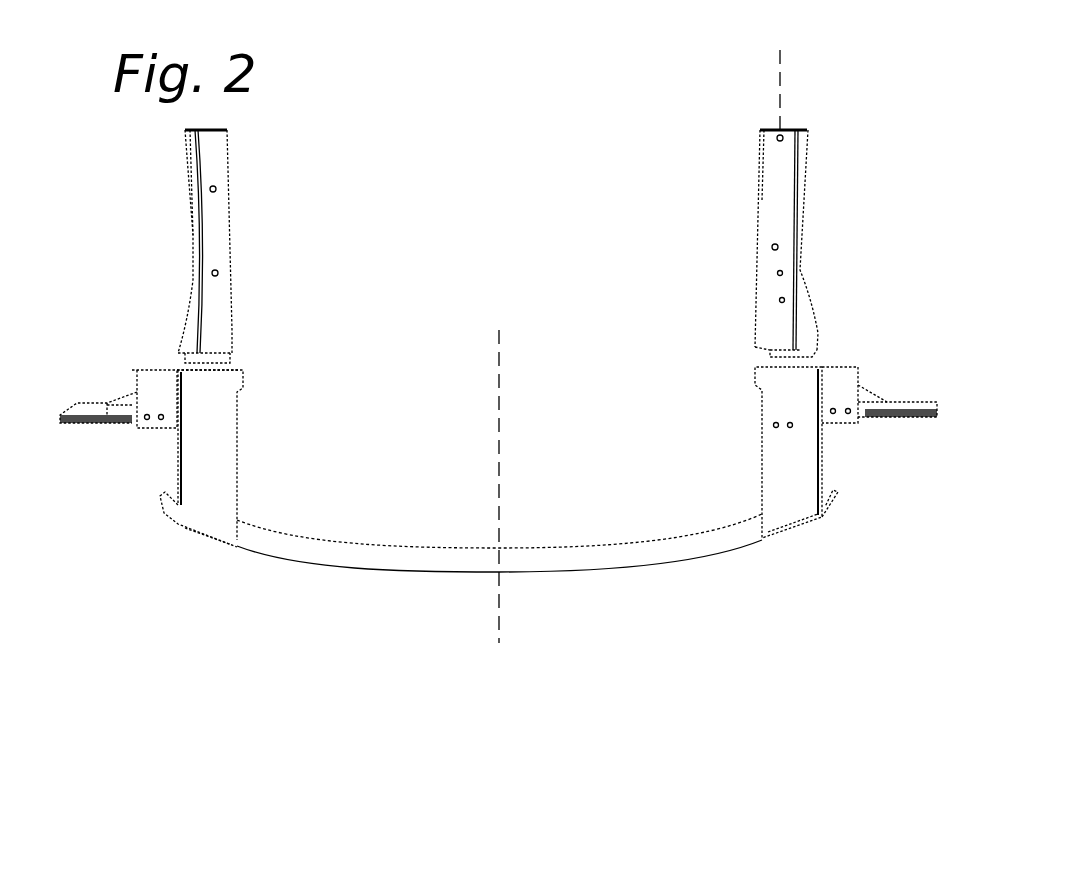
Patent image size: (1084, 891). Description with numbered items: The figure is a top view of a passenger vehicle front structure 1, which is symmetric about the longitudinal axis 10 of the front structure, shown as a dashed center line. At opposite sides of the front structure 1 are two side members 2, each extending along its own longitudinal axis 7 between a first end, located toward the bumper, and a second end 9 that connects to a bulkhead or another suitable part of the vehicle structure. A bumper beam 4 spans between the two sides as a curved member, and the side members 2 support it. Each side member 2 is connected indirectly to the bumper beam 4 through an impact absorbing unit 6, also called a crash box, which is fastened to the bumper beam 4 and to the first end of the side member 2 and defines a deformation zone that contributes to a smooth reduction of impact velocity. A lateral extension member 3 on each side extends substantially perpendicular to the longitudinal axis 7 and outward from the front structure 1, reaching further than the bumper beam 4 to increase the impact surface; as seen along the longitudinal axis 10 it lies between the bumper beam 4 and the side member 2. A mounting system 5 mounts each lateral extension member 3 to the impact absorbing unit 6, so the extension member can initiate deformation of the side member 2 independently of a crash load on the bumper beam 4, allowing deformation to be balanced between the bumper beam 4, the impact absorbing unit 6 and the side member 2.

The passenger vehicle front structure 1 is at (268, 664).
The side member 2 is at (186, 232).
The lateral extension member 3 is at (98, 432).
The bumper beam 4 is at (441, 567).
The mounting system 5 is at (151, 368).
The impact absorbing unit 6 is at (239, 460).
The longitudinal axis 7 is at (780, 63).
The second end 9 is at (795, 130).
The longitudinal axis of vehicle front structure 10 is at (499, 631).